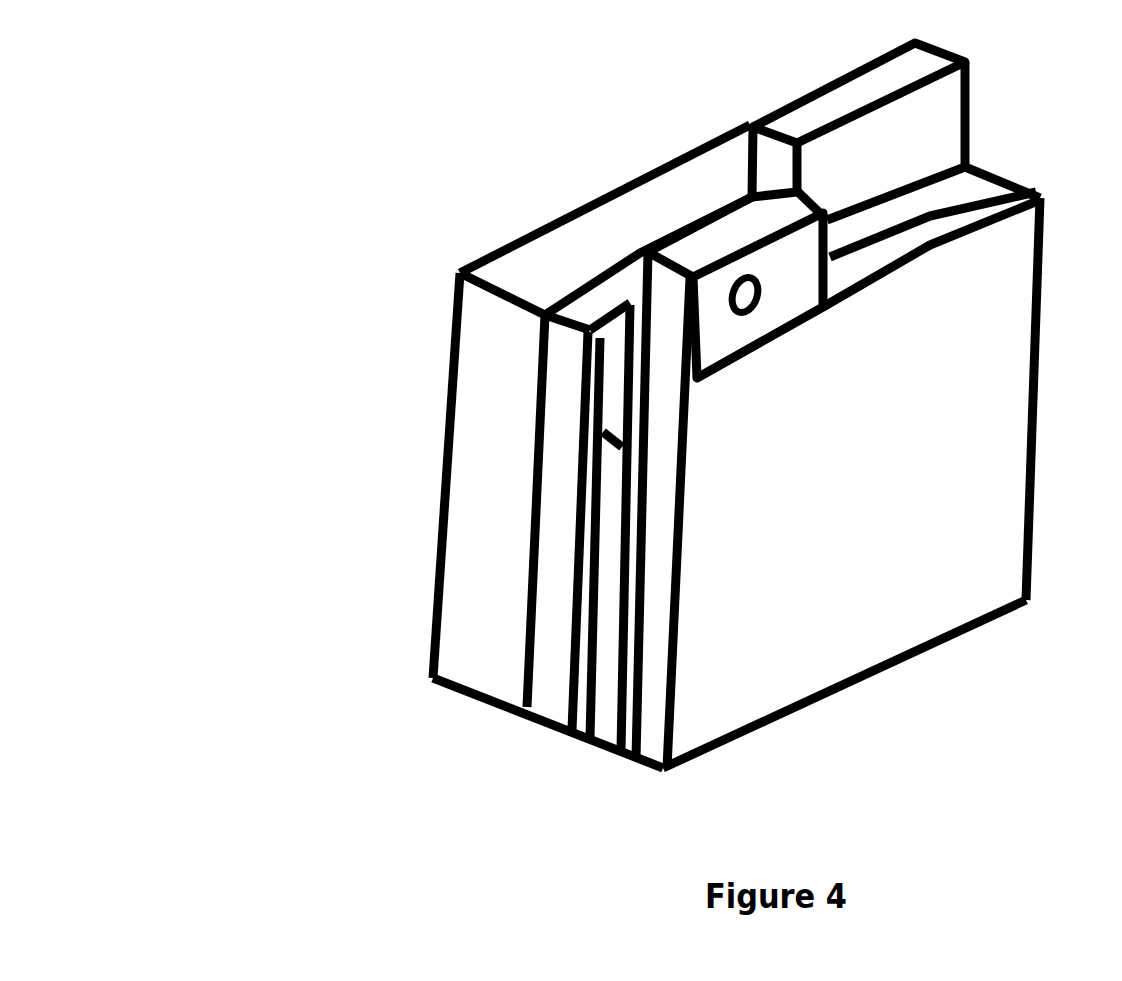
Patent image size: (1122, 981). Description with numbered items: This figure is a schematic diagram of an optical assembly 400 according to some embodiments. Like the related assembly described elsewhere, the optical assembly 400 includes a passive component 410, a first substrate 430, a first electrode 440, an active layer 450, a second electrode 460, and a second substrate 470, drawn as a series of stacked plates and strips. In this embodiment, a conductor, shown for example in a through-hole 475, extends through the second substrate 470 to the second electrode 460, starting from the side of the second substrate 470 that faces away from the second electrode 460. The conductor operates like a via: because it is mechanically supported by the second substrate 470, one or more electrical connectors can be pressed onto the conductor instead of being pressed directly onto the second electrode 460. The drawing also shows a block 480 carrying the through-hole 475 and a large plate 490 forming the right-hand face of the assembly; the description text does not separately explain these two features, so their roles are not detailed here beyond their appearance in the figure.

The optical assembly 400 is at (280, 72).
The passive component 410 is at (607, 247).
The first substrate 430 is at (555, 548).
The first electrode 440 is at (925, 135).
The active layer 450 is at (600, 703).
The second electrode 460 is at (605, 735).
The second substrate 470 is at (643, 703).
The through-hole 475 is at (748, 292).
The block with hole 480 is at (790, 258).
The main plate 490 is at (918, 578).